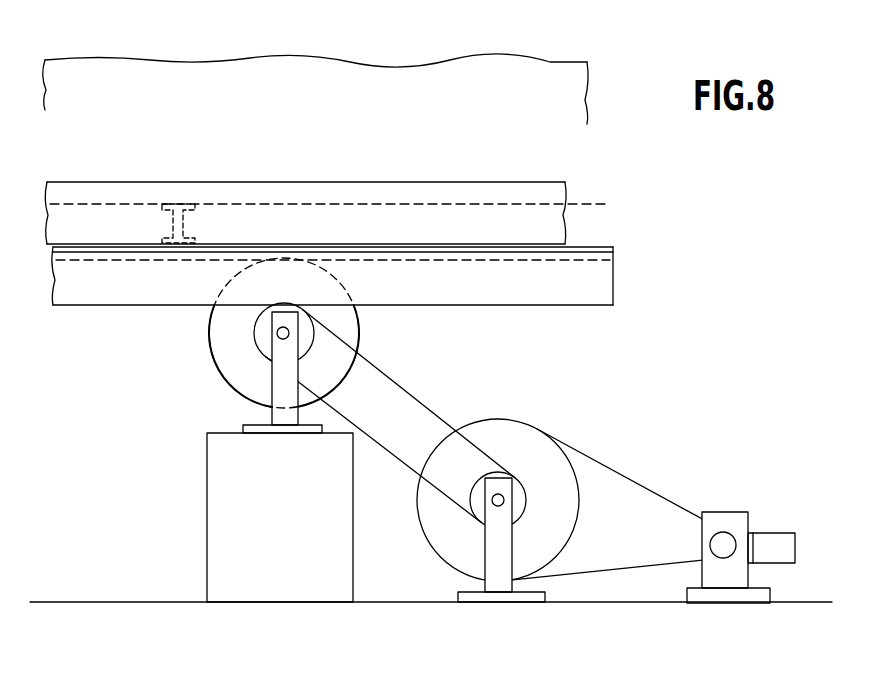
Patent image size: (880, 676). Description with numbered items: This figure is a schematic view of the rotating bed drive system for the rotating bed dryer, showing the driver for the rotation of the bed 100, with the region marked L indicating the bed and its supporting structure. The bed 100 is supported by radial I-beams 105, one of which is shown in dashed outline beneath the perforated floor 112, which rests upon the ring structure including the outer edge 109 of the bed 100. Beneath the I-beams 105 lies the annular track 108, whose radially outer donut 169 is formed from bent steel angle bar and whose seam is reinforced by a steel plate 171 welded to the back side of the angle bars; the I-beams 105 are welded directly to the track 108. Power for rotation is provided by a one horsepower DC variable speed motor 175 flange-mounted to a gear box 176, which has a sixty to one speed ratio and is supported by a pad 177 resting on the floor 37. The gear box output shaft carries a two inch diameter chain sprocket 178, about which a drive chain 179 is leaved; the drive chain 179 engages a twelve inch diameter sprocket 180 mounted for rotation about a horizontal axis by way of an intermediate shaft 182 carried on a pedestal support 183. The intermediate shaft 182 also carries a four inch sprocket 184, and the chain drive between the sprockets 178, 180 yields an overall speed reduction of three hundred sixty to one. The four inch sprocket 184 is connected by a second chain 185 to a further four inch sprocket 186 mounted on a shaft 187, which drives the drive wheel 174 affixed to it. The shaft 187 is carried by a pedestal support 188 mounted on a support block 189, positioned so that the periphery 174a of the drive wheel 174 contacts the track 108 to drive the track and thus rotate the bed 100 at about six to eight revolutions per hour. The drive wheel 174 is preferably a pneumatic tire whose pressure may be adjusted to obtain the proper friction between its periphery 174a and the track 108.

The label region L is at (503, 60).
The rotating bed 100 is at (337, 121).
The floor 37 is at (108, 594).
The outer edge 109 is at (106, 185).
The perforated floor 112 is at (588, 205).
The I-beam 105 is at (168, 223).
The annular track 108 is at (618, 268).
The steel plate 171 is at (598, 245).
The radially outer donut 169 is at (597, 291).
The drive wheel 174 is at (350, 328).
The periphery 174a is at (210, 355).
The sprocket 186 is at (260, 331).
The shaft 187 is at (280, 337).
The pedestal support 188 is at (290, 372).
The support block 189 is at (220, 474).
The second chain 185 is at (452, 398).
The sprocket 180 is at (528, 440).
The sprocket 184 is at (517, 513).
The intermediate shaft 182 is at (492, 503).
The pedestal support 183 is at (493, 553).
The drive chain 179 is at (617, 505).
The chain sprocket 178 is at (712, 544).
The gear box 176 is at (762, 499).
The pad 177 is at (757, 595).
The motor 175 is at (787, 533).